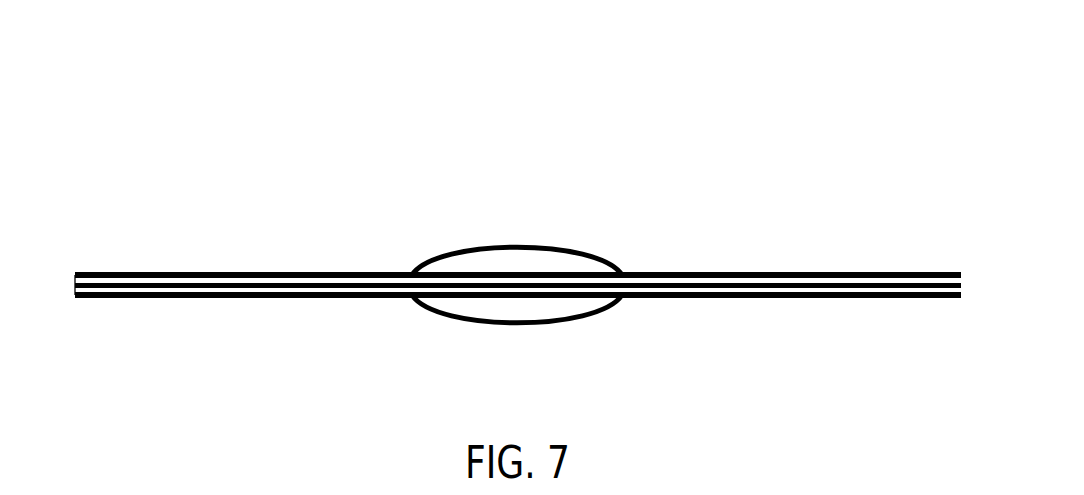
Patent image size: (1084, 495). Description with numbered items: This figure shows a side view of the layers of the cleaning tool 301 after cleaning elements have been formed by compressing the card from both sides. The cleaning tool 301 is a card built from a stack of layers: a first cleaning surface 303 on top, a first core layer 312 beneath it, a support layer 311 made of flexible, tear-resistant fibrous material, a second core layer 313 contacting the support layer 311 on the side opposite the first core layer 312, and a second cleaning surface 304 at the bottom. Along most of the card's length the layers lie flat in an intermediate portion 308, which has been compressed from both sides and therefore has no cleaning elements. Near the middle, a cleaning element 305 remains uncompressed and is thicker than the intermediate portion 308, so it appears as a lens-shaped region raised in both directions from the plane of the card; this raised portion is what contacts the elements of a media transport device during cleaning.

The cleaning tool 301 is at (258, 90).
The first cleaning surface 303 is at (740, 272).
The second cleaning surface 304 is at (812, 298).
The cleaning element 305 is at (505, 265).
The intermediate portion 308 is at (250, 270).
The support layer 311 is at (83, 291).
The first core layer 312 is at (352, 278).
The second core layer 313 is at (292, 290).